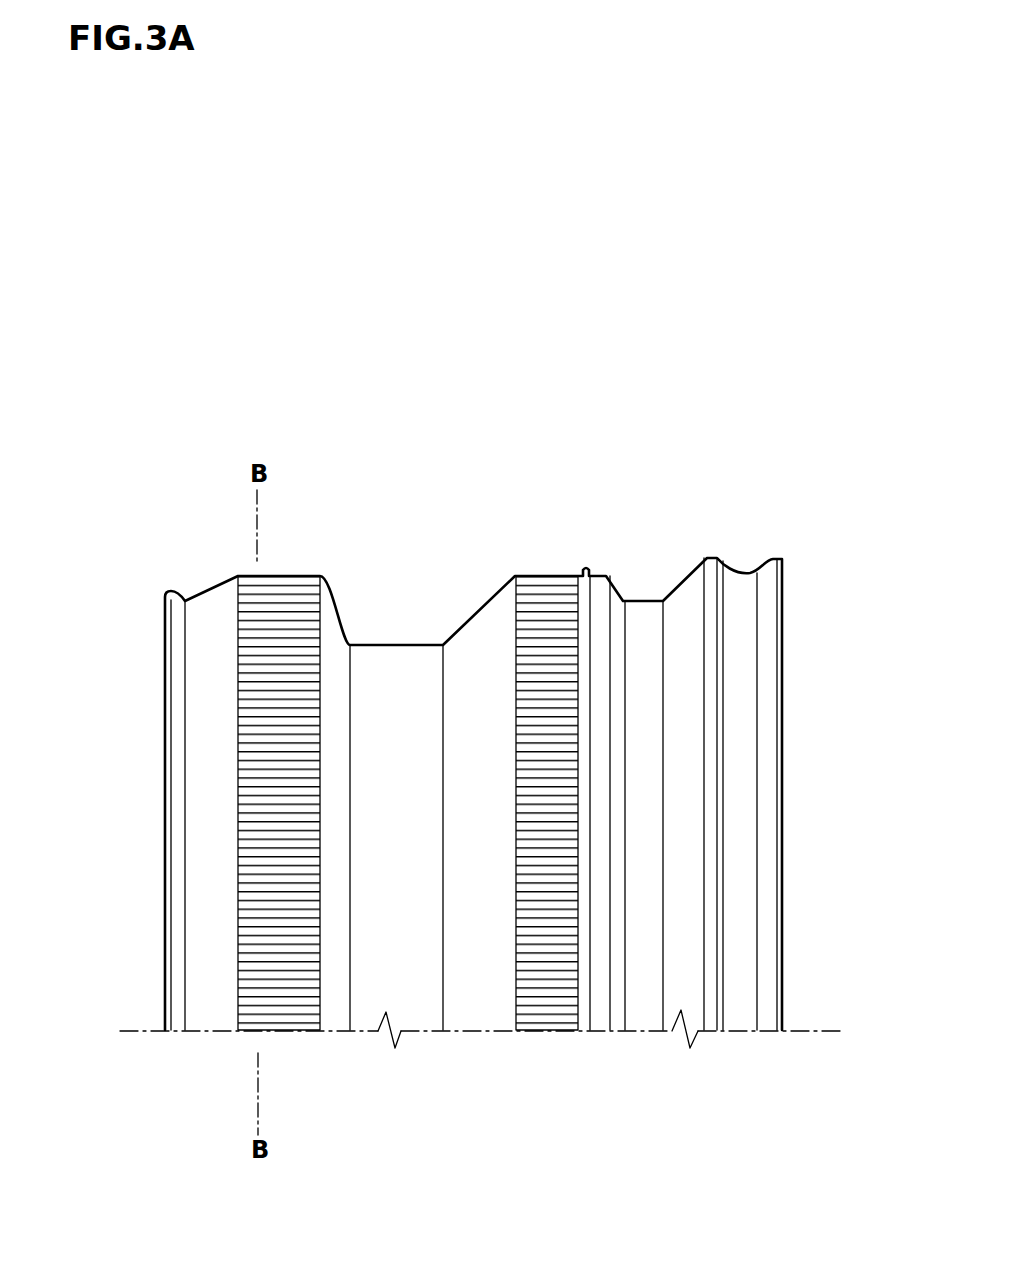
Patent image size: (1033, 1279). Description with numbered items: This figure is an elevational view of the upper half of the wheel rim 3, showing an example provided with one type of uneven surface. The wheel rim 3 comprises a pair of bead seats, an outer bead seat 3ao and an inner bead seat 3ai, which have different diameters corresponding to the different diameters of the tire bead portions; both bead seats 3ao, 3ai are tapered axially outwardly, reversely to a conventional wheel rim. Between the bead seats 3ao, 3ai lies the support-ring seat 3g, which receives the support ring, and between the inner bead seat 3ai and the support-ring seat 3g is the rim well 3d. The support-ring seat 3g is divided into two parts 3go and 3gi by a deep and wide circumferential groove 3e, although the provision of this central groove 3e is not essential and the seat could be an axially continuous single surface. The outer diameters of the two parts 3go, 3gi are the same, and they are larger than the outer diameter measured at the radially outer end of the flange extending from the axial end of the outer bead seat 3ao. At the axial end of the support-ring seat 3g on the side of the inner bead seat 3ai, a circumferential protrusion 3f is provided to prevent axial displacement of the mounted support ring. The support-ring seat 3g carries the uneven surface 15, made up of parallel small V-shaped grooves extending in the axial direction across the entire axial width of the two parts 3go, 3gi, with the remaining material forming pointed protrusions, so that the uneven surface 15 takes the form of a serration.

The wheel rim 3 is at (676, 391).
The support-ring seat 3g is at (408, 668).
The outer part of support-ring seat 3go is at (283, 566).
The inner part of support-ring seat 3gi is at (541, 566).
The uneven surface 15 is at (262, 640).
The circumferential groove 3e is at (392, 645).
The circumferential protrusion 3f is at (586, 571).
The outer bead seat 3ao is at (215, 826).
The rim well 3d is at (643, 740).
The inner bead seat 3ai is at (740, 825).